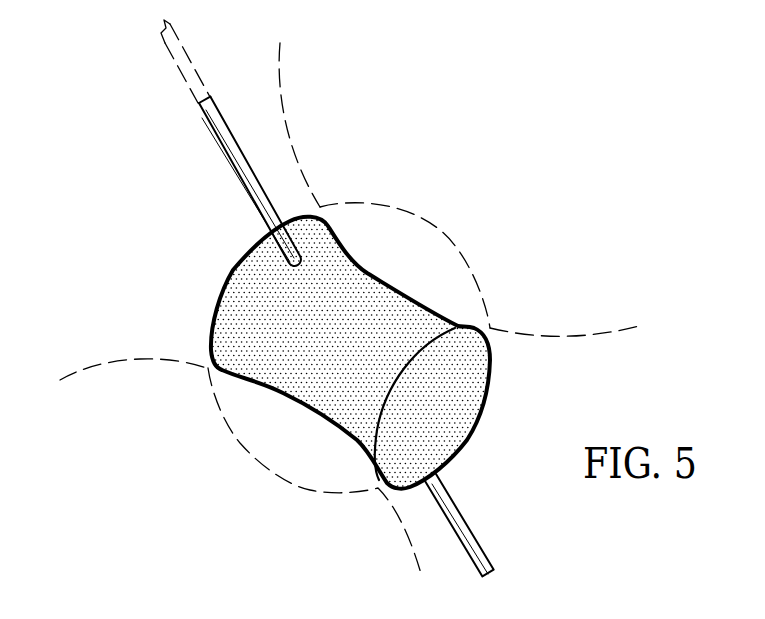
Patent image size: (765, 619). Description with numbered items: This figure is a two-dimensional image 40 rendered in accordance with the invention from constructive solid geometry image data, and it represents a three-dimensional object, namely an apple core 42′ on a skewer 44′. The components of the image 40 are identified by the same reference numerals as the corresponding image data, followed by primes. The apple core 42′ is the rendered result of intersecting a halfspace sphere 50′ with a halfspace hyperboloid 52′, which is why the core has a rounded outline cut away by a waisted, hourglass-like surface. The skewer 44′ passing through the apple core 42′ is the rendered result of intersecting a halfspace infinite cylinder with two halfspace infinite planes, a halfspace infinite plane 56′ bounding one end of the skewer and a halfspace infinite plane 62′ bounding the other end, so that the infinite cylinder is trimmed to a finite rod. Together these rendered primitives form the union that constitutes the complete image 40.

The image 40 is at (354, 338).
The apple core 42′ is at (227, 322).
The skewer 44′ is at (251, 167).
The halfspace sphere 50′ is at (192, 80).
The halfspace hyperboloid 52′ is at (578, 320).
The halfspace infinite plane 56′ is at (204, 100).
The halfspace infinite plane 62′ is at (496, 578).